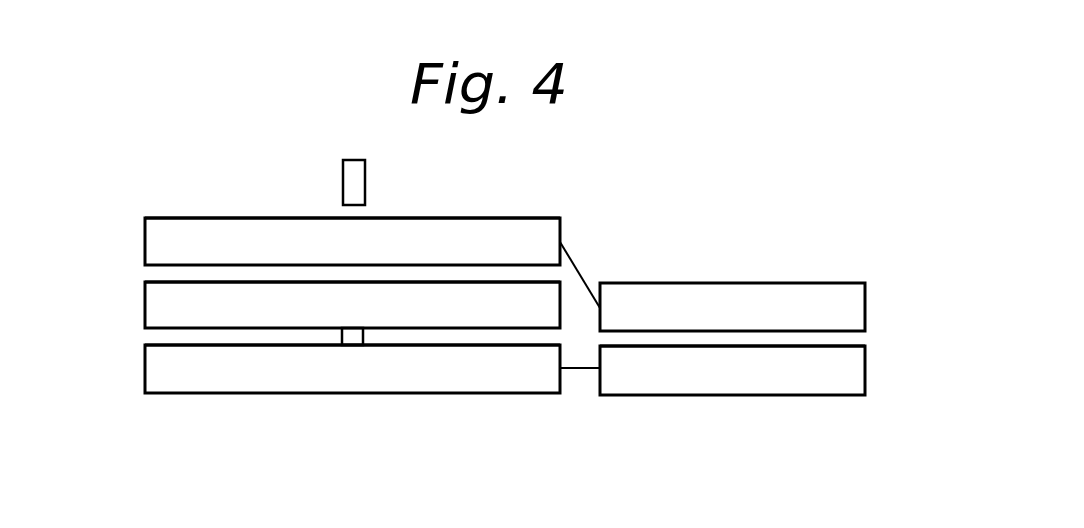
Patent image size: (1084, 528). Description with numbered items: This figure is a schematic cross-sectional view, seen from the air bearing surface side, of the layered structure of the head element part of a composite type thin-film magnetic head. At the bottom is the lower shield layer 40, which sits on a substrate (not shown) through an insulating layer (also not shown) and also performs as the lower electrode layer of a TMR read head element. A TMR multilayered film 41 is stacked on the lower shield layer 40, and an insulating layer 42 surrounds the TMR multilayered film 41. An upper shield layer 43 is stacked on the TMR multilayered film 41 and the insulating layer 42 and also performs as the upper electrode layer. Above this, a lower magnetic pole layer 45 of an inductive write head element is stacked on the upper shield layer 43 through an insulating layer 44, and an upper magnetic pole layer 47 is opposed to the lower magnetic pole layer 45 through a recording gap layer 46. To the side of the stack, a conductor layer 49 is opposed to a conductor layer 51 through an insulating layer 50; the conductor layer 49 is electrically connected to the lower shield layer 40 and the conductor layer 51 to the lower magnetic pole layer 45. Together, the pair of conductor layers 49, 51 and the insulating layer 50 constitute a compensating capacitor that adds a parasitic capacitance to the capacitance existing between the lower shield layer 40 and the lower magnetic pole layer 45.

The lower shield layer 40 is at (160, 371).
The TMR multilayered film 41 is at (353, 337).
The insulating layer 42 is at (160, 338).
The upper shield layer 43 is at (160, 306).
The insulating layer 44 is at (160, 273).
The lower magnetic pole layer 45 is at (160, 237).
The recording gap layer 46 is at (350, 211).
The upper magnetic pole layer 47 is at (343, 167).
The conductor layer 49 is at (851, 377).
The insulating layer 50 is at (851, 340).
The conductor layer 51 is at (851, 311).